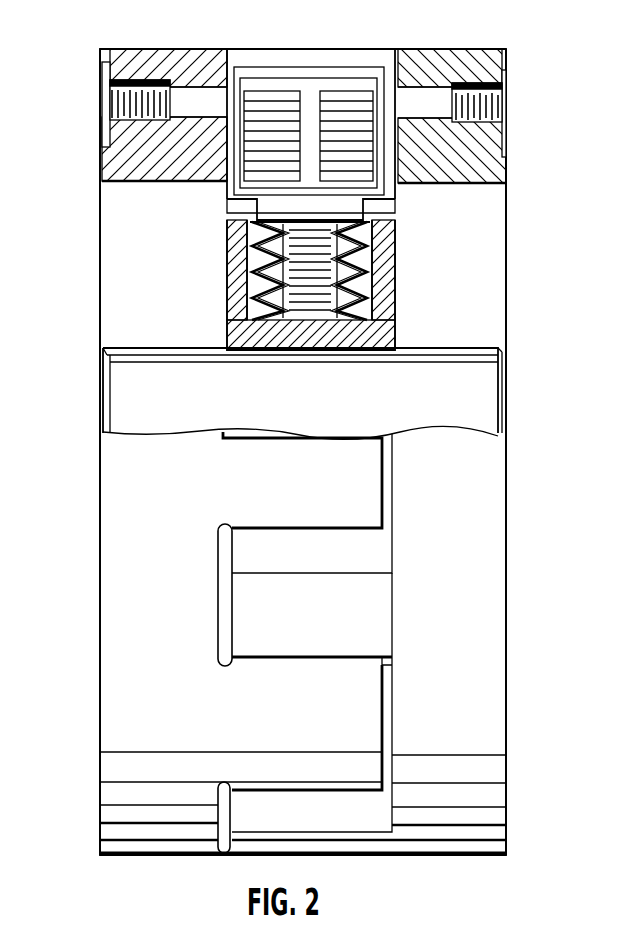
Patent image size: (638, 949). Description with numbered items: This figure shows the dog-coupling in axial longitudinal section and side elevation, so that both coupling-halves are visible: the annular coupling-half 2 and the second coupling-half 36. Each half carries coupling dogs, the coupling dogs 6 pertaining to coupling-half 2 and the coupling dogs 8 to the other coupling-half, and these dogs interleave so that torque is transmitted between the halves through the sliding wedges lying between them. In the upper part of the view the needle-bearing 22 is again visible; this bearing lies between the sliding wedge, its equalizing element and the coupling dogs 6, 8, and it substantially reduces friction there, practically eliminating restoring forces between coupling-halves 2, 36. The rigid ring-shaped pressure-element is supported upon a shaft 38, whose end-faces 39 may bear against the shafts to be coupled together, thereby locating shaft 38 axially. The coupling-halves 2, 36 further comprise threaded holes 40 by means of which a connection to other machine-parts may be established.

The coupling-half 2 is at (462, 560).
The coupling dogs 6 is at (339, 630).
The coupling dogs 8 is at (296, 508).
The needle-bearing 22 is at (348, 116).
The second coupling-half 36 is at (172, 560).
The shaft 38 is at (442, 398).
The end-faces 39 is at (103, 385).
The threaded holes 40 is at (112, 96).